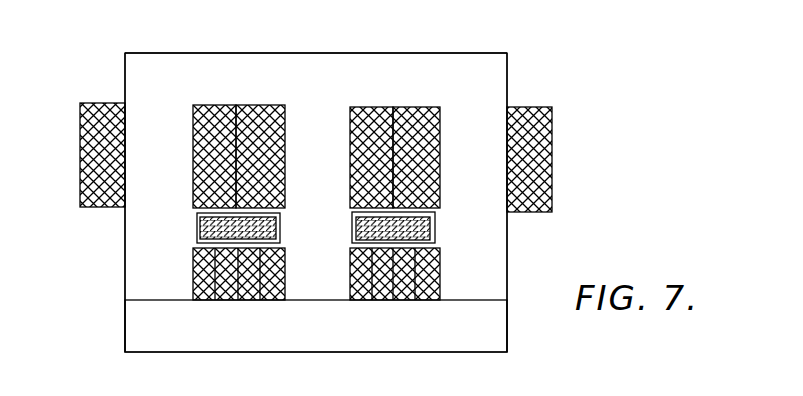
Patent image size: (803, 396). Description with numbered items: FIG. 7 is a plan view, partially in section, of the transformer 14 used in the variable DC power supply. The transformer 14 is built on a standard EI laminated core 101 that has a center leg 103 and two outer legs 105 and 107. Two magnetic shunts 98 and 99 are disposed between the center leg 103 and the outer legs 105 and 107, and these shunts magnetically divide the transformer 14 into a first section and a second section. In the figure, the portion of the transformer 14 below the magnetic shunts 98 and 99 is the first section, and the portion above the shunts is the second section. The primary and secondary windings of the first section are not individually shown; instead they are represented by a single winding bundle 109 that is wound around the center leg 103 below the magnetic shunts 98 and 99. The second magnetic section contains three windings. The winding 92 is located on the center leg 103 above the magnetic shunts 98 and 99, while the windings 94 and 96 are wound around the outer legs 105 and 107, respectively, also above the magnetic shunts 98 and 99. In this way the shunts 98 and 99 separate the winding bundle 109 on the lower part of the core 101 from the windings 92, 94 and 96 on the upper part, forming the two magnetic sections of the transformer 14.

The transformer 14 is at (362, 30).
The winding 92 is at (260, 105).
The winding 94 is at (80, 141).
The winding 96 is at (552, 133).
The magnetic shunt 98 is at (200, 222).
The magnetic shunt 99 is at (432, 222).
The EI laminated core 101 is at (176, 52).
The center leg 103 is at (316, 297).
The outer leg 105 is at (133, 258).
The outer leg 107 is at (500, 256).
The winding bundle 109 is at (237, 300).